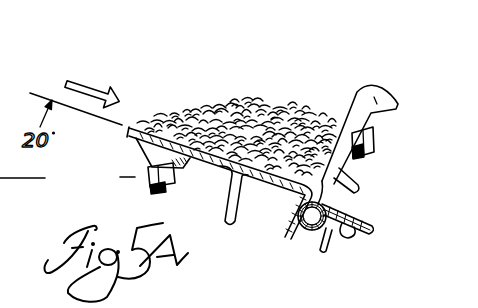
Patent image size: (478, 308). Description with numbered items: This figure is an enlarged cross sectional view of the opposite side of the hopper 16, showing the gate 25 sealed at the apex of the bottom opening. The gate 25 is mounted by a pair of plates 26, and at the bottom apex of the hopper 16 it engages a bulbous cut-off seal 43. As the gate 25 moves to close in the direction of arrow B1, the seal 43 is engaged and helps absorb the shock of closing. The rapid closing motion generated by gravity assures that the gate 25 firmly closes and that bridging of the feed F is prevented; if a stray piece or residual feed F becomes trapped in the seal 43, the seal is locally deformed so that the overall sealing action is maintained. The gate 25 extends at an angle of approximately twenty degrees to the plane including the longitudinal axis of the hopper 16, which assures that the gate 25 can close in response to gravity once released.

The hopper 16 is at (357, 92).
The gate 25 is at (267, 178).
The plates 26 is at (185, 170).
The bulbous cut-off seal 43 is at (300, 233).
The feed material F is at (248, 117).
The arrow B1 is at (86, 88).